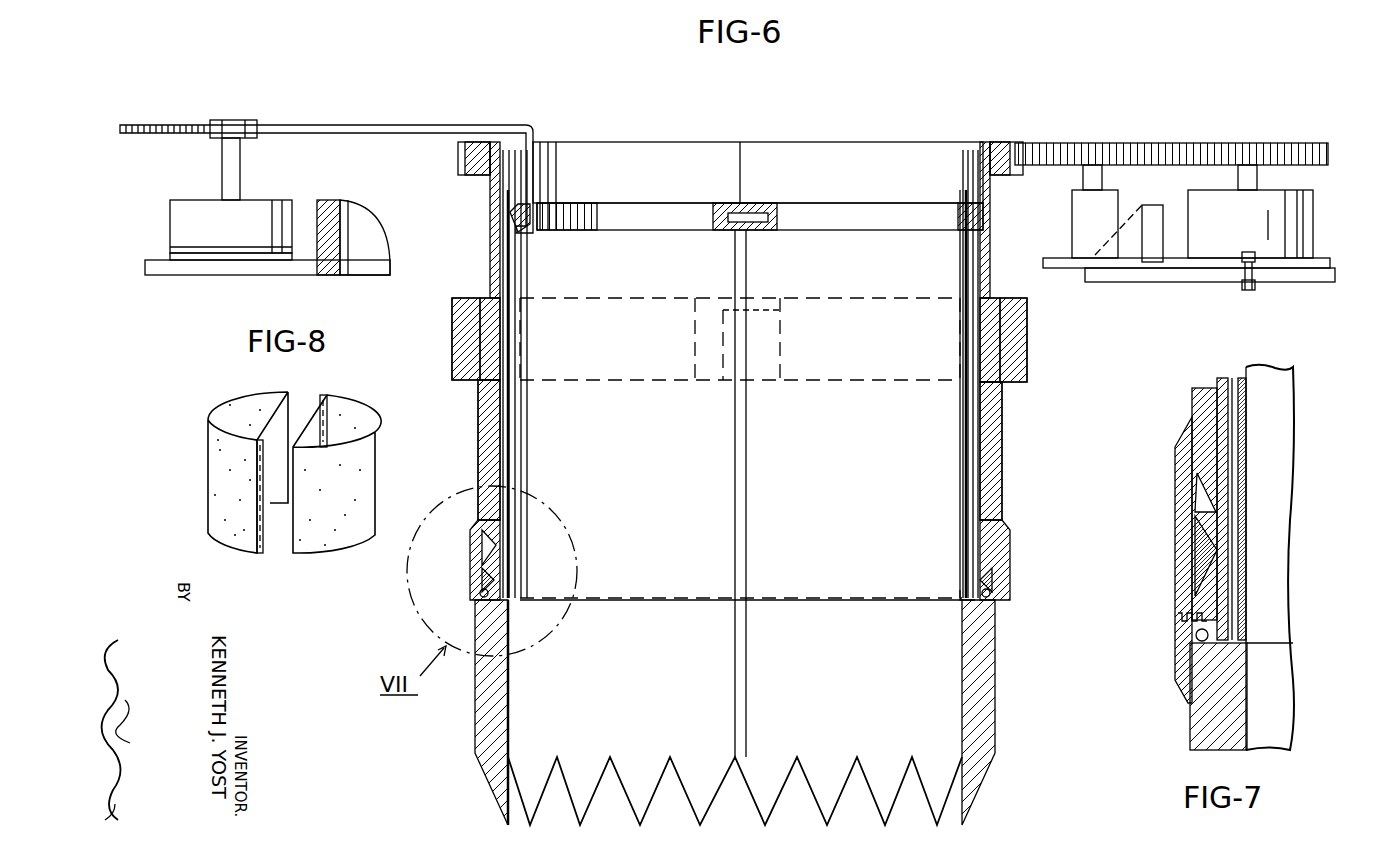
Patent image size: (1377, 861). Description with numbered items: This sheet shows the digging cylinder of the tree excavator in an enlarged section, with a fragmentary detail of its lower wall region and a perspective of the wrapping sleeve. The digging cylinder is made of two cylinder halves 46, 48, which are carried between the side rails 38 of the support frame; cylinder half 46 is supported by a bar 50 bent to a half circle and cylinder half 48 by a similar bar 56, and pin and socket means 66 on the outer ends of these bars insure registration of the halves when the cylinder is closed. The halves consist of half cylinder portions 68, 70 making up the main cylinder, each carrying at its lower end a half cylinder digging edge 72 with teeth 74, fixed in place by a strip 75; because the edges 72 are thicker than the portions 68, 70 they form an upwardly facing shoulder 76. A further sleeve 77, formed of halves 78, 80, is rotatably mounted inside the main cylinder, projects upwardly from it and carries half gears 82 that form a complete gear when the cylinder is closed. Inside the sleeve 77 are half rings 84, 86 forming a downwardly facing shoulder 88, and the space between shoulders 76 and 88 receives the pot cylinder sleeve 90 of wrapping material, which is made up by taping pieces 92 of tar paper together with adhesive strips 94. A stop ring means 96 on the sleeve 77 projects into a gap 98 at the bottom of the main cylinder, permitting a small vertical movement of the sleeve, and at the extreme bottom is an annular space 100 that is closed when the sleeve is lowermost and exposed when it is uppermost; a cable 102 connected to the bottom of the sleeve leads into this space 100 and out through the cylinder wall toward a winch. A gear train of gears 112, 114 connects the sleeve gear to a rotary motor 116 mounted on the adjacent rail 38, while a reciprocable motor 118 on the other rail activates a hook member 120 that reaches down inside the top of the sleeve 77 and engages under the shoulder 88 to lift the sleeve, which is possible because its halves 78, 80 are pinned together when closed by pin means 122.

In FIG. 6, the side rails 38 is at (326, 268).
In FIG. 6, the cylinder half 46 is at (426, 353).
In FIG. 6, the cylinder half 48 is at (1034, 396).
In FIG. 6, the bar 50 is at (456, 298).
In FIG. 6, the bar 56 is at (1012, 326).
In FIG. 6, the pin and socket means 66 is at (768, 392).
In FIG. 6, the half cylinder portion 68 is at (1002, 468).
In FIG. 6, the half cylinder portion 70 is at (478, 463).
In FIG. 7, the half cylinder portion 70 is at (1204, 392).
In FIG. 6, the half cylinder digging edge 72 is at (996, 666).
In FIG. 7, the half cylinder digging edge 72 is at (1200, 727).
In FIG. 6, the teeth 74 is at (887, 812).
In FIG. 6, the strip 75 is at (1004, 600).
In FIG. 7, the strip 75 is at (1178, 598).
In FIG. 6, the upwardly facing shoulder 76 is at (962, 598).
In FIG. 6, the sleeve 77 is at (966, 400).
In FIG. 7, the sleeve 77 is at (1250, 476).
In FIG. 6, the sleeve half 78 is at (480, 418).
In FIG. 6, the sleeve half 80 is at (490, 242).
In FIG. 7, the sleeve half 80 is at (1228, 440).
In FIG. 6, the half gears 82 is at (462, 152).
In FIG. 6, the half ring 84 is at (850, 218).
In FIG. 6, the half ring 86 is at (640, 213).
In FIG. 6, the downwardly facing shoulder 88 is at (968, 232).
In FIG. 6, the pot cylinder sleeve 90 is at (962, 432).
In FIG. 7, the pot cylinder sleeve 90 is at (1246, 570).
In FIG. 8, the pieces 92 is at (210, 502).
In FIG. 6, the adhesive strips 94 is at (748, 503).
In FIG. 8, the adhesive strips 94 is at (322, 398).
In FIG. 6, the stop ring means 96 is at (494, 552).
In FIG. 7, the stop ring means 96 is at (1218, 556).
In FIG. 6, the gap 98 is at (498, 528).
In FIG. 7, the gap 98 is at (1207, 515).
In FIG. 6, the annular space 100 is at (858, 610).
In FIG. 7, the annular space 100 is at (1212, 637).
In FIG. 6, the cable 102 is at (480, 597).
In FIG. 7, the cable 102 is at (1197, 637).
In FIG. 6, the gear 112 is at (1108, 143).
In FIG. 6, the gear 114 is at (1228, 143).
In FIG. 6, the rotary motor 116 is at (1297, 237).
In FIG. 6, the reciprocable motor 118 is at (262, 200).
In FIG. 6, the hook member 120 is at (376, 125).
In FIG. 6, the pin means 122 is at (762, 205).